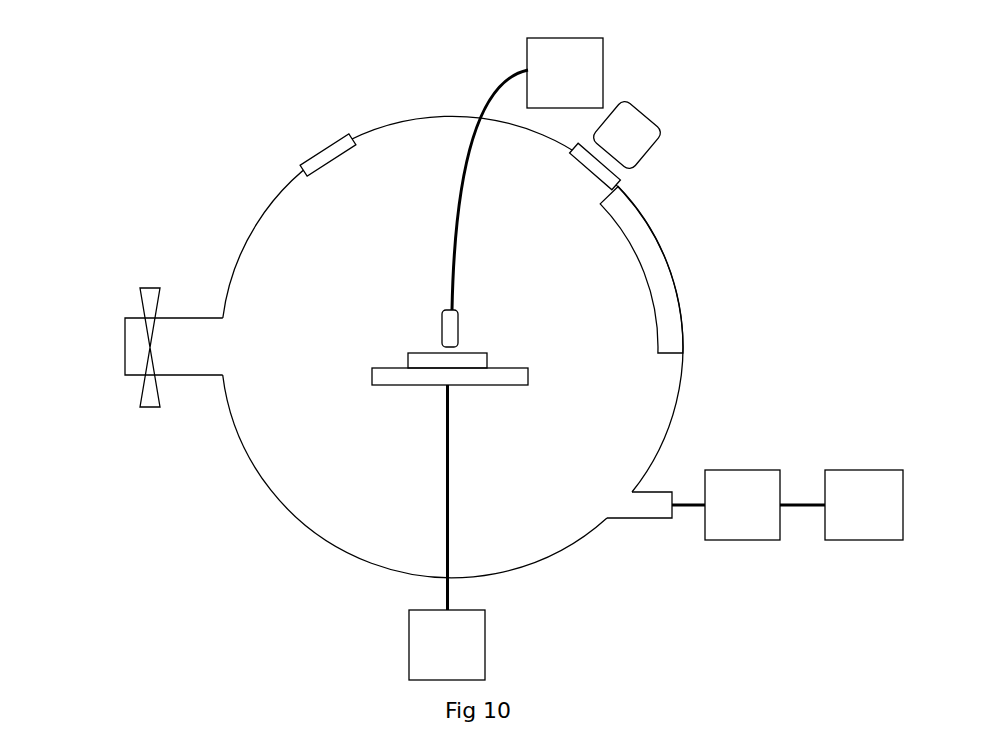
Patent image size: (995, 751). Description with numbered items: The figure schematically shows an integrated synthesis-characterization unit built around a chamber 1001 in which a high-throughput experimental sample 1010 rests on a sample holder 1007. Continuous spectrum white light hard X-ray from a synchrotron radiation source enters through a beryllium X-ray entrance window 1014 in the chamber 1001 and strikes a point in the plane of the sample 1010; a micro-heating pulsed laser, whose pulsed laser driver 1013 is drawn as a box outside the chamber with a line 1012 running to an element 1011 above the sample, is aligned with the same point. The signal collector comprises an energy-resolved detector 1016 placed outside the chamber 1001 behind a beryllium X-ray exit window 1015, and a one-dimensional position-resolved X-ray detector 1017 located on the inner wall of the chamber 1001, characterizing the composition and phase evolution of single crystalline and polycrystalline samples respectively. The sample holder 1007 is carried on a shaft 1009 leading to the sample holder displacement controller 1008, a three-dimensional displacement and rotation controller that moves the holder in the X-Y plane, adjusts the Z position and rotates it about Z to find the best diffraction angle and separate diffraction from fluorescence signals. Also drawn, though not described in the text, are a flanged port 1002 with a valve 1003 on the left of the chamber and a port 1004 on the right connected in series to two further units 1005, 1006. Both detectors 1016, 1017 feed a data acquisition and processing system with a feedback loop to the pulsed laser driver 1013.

The chamber 1001 is at (277, 499).
The gas inlet port 1002 is at (198, 376).
The valve 1003 is at (138, 390).
The exhaust port 1004 is at (648, 518).
The vacuum pump 1005 is at (740, 543).
The exhaust treatment unit 1006 is at (865, 540).
The sample holder 1007 is at (513, 385).
The sample holder displacement controller 1008 is at (407, 645).
The stage shaft 1009 is at (447, 457).
The sample 1010 is at (408, 360).
The laser processing head 1011 is at (440, 323).
The optical fiber 1012 is at (498, 92).
The pulsed laser driver 1013 is at (603, 68).
The X-ray entrance window 1014 is at (327, 147).
The X-ray exit window 1015 is at (622, 182).
The energy-resolved detector 1016 is at (663, 137).
The 1D position-resolved X-ray detector 1017 is at (667, 250).